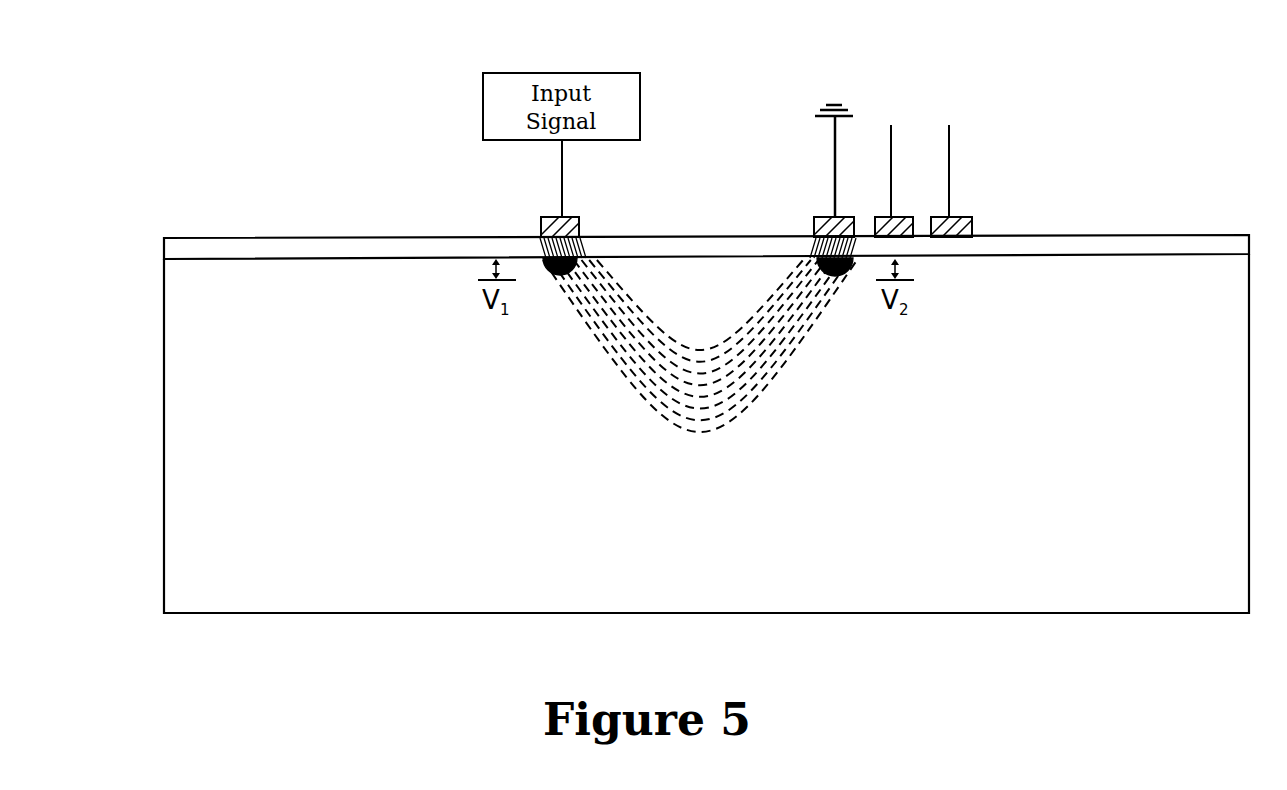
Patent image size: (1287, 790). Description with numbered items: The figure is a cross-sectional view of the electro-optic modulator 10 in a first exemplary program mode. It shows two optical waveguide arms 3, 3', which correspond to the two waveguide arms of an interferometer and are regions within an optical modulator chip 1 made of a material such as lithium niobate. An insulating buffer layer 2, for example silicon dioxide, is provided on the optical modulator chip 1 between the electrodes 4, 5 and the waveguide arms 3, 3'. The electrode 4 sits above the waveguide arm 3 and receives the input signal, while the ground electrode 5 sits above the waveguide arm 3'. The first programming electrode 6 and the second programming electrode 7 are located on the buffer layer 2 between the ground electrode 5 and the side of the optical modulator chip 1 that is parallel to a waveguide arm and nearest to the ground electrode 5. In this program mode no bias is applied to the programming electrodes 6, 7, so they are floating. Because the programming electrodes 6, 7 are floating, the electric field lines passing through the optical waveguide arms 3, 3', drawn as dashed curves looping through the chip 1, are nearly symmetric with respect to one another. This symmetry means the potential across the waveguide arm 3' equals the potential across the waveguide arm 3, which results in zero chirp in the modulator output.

The surface acoustic wave device 10 is at (277, 114).
The optical modulator chip 1 is at (185, 393).
The insulating buffer layer 2 is at (176, 248).
The electrode 4 is at (551, 217).
The optical waveguide arm 3 is at (603, 272).
The optical waveguide arm 3' is at (792, 272).
The ground electrode 5 is at (822, 218).
The first programming electrode 6 is at (887, 218).
The second programming electrode 7 is at (940, 218).